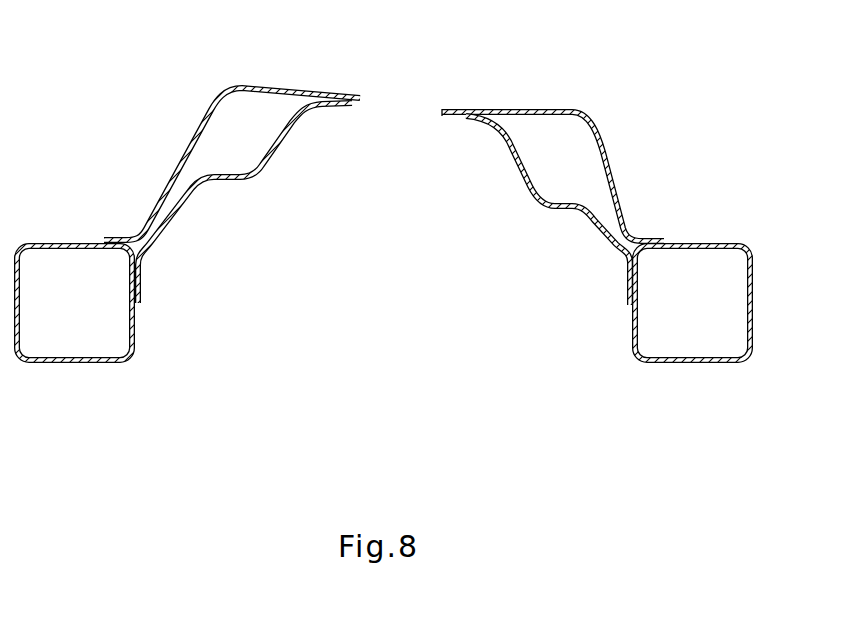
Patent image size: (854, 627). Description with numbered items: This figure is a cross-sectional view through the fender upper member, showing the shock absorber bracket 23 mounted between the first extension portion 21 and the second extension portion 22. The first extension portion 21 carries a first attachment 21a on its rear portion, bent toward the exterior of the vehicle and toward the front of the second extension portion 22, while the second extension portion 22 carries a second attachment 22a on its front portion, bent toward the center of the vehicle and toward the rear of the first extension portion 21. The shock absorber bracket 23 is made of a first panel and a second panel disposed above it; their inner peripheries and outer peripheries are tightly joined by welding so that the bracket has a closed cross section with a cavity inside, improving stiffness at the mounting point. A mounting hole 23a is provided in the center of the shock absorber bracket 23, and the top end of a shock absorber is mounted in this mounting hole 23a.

The first extension portion 21 is at (692, 340).
The first attachment 21a is at (693, 366).
The second extension portion 22 is at (74, 340).
The second attachment 22a is at (78, 366).
The shock absorber bracket 23 is at (539, 160).
The mounting hole 23a is at (407, 110).